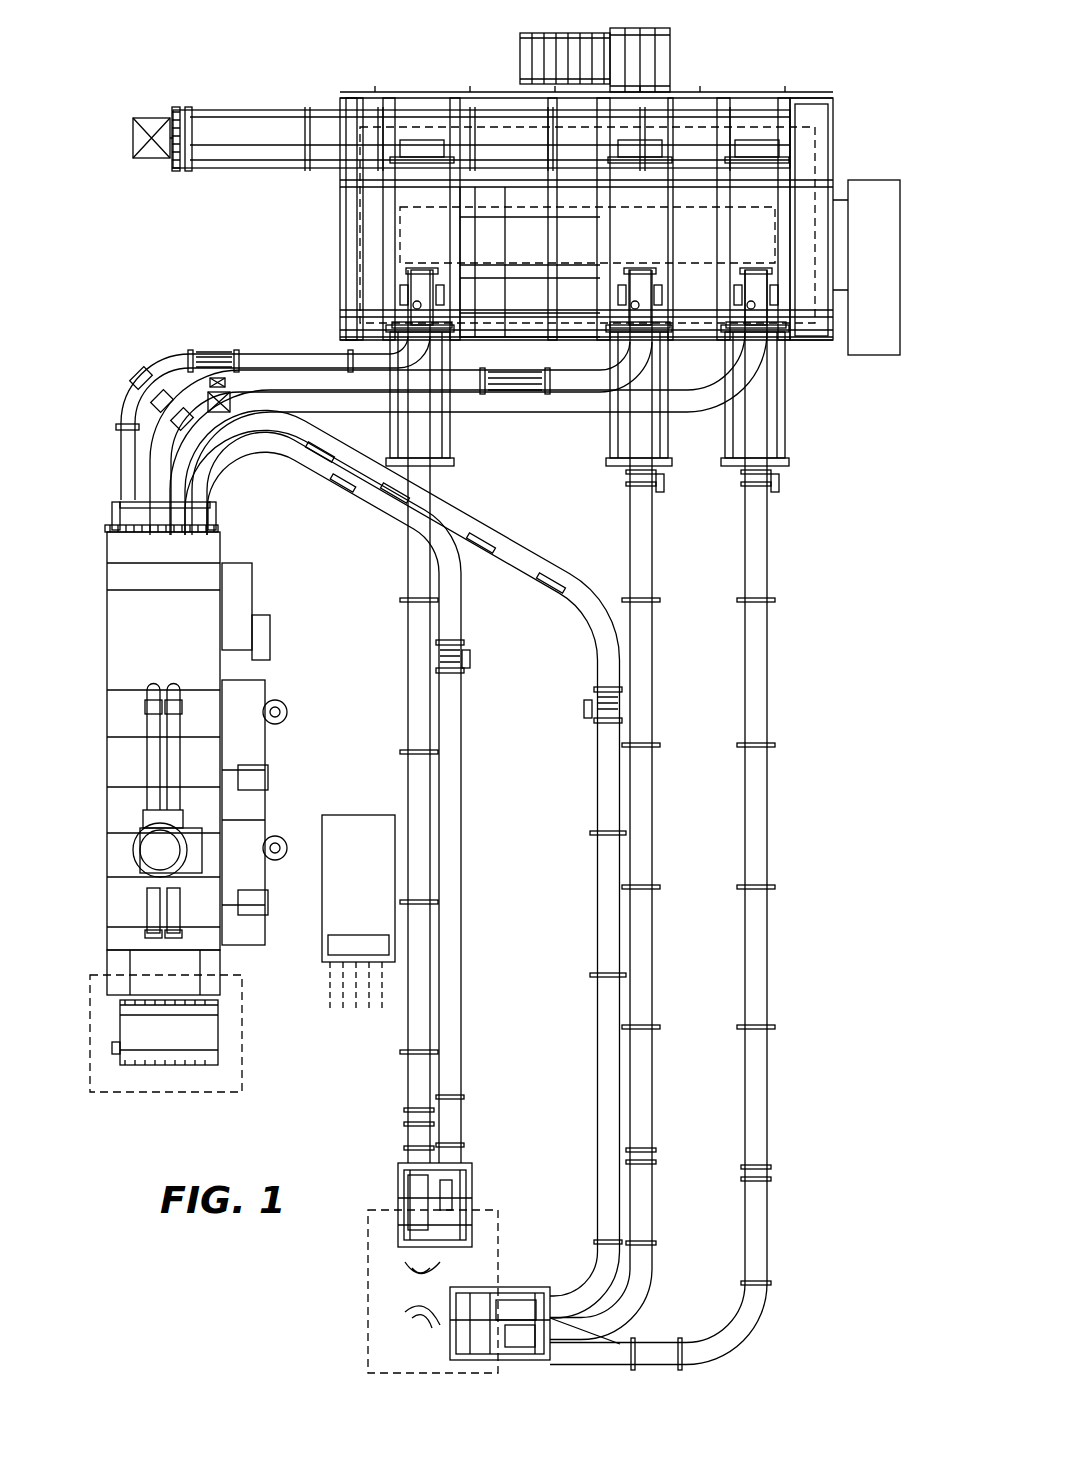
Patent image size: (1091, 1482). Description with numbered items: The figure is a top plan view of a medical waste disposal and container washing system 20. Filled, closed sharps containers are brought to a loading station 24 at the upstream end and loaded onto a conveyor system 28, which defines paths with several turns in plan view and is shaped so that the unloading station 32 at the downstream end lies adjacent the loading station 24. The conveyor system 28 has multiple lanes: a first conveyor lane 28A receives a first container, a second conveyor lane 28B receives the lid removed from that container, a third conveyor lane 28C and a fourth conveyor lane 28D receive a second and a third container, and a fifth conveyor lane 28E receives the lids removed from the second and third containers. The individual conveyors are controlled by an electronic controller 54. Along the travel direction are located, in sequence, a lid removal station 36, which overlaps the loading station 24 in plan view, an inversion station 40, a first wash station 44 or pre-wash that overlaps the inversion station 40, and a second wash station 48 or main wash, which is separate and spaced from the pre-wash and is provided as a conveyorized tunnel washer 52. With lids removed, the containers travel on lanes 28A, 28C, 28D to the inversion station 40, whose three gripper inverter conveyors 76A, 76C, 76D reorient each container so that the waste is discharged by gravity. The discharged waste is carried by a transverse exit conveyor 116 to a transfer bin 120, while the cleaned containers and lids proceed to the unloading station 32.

The system 20 is at (138, 60).
The exit conveyor 116 is at (290, 118).
The transfer bin 120 is at (133, 138).
The gripper inverter conveyor 76A is at (403, 272).
The gripper inverter conveyor 76C is at (651, 228).
The gripper inverter conveyor 76D is at (758, 186).
The inversion station 40 is at (830, 147).
The first wash station 44 is at (777, 238).
The second wash station 48 is at (76, 596).
The conveyorized tunnel washer 52 is at (122, 808).
The electronic controller 54 is at (355, 822).
The conveyor system 28 is at (832, 636).
The first conveyor lane 28A is at (408, 1036).
The second conveyor lane 28B is at (455, 1070).
The third conveyor lane 28C is at (635, 826).
The fourth conveyor lane 28D is at (762, 1082).
The fifth conveyor lane 28E is at (596, 908).
The unloading station 32 is at (138, 1094).
The lid removal station 36 is at (403, 1188).
The loading station 24 is at (366, 1306).